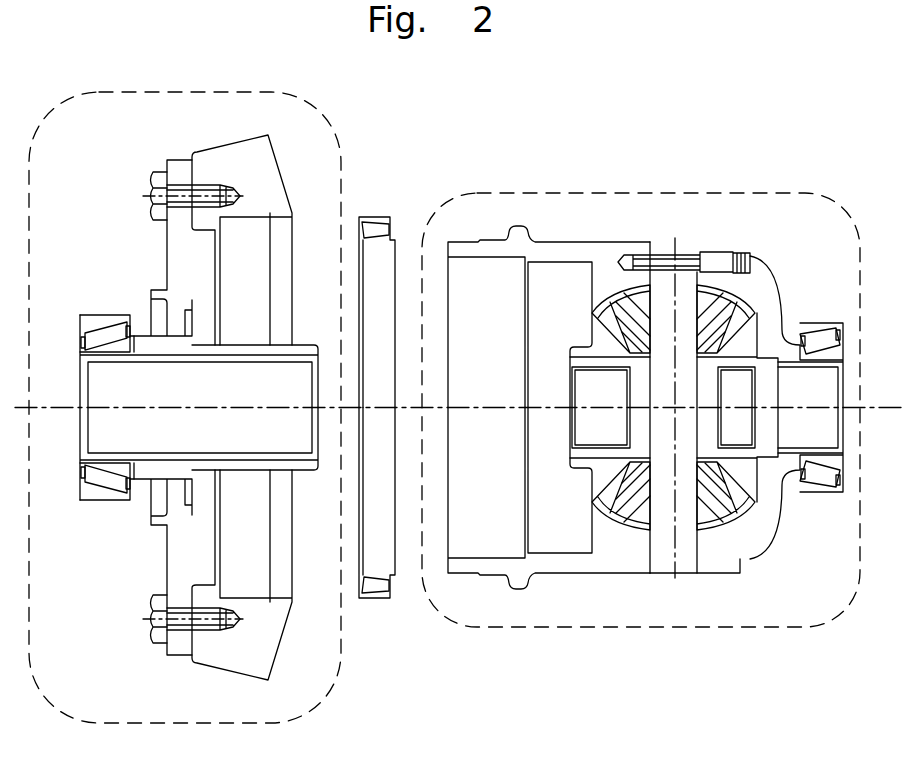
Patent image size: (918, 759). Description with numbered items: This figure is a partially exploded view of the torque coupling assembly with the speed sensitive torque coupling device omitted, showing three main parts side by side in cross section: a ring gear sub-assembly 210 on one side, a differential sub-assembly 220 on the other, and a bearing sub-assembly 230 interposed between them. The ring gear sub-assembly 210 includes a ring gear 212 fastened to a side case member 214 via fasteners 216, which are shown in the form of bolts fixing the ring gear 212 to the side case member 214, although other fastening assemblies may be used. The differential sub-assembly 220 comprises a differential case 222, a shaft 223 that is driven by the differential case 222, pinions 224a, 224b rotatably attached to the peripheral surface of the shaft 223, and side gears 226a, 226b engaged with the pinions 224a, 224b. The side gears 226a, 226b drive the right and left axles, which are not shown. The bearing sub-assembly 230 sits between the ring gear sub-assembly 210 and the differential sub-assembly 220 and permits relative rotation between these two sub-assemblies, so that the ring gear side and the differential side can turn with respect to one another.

The ring gear sub-assembly 210 is at (127, 696).
The ring gear 212 is at (215, 152).
The side case member 214 is at (177, 245).
The fasteners 216 is at (152, 188).
The differential sub-assembly 220 is at (821, 600).
The differential case 222 is at (583, 255).
The shaft 223 is at (682, 283).
The pinion 224a is at (725, 305).
The pinion 224b is at (710, 520).
The side gear 226a is at (603, 475).
The side gear 226b is at (750, 340).
The bearing sub-assembly 230 is at (378, 612).